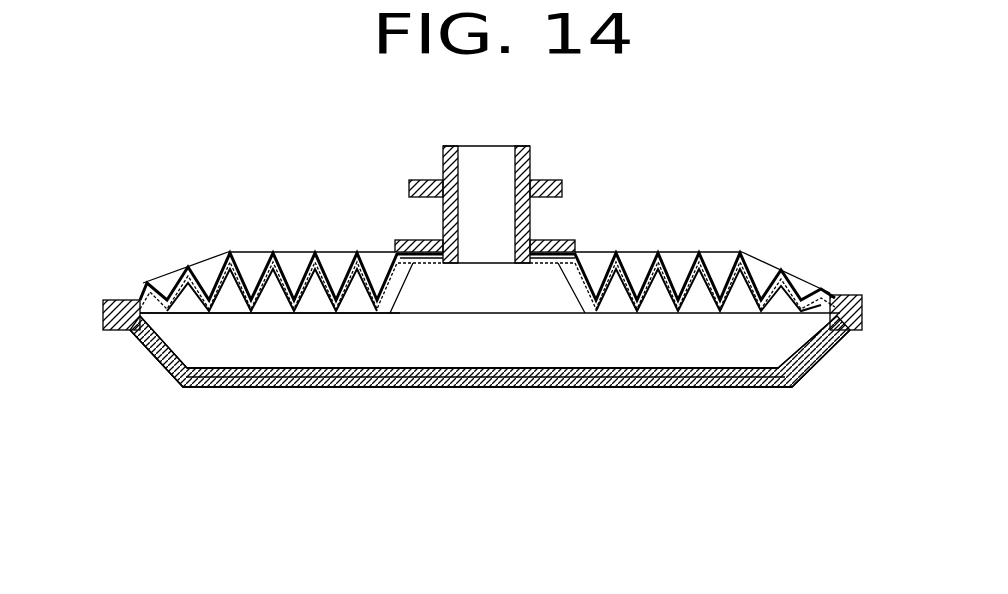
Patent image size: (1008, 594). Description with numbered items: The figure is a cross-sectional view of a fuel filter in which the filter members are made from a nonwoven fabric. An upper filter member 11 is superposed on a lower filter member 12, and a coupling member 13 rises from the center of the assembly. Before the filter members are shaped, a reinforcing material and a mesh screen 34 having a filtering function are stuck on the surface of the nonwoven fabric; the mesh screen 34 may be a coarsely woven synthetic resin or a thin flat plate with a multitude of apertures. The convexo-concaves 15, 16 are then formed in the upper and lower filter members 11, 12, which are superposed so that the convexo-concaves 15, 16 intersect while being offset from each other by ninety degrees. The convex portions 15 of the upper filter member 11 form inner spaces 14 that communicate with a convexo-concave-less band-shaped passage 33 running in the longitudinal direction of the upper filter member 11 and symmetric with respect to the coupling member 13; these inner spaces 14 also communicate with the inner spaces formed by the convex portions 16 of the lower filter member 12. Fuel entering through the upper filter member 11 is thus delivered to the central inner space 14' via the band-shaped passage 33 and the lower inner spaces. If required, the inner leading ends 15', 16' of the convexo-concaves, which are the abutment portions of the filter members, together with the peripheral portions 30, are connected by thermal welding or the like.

The upper filter member 11 is at (145, 283).
The lower filter member 12 is at (162, 374).
The coupling member 13 is at (527, 165).
The inner spaces 14 is at (455, 243).
The central inner space 14' is at (523, 228).
The convex portions 15 is at (494, 232).
The inner leading ends 15' is at (270, 385).
The convex portions 16 is at (482, 417).
The inner leading ends 16' is at (696, 434).
The peripheral portions 30 is at (110, 300).
The band-shaped passage 33 is at (257, 254).
The mesh screen 34 is at (213, 262).